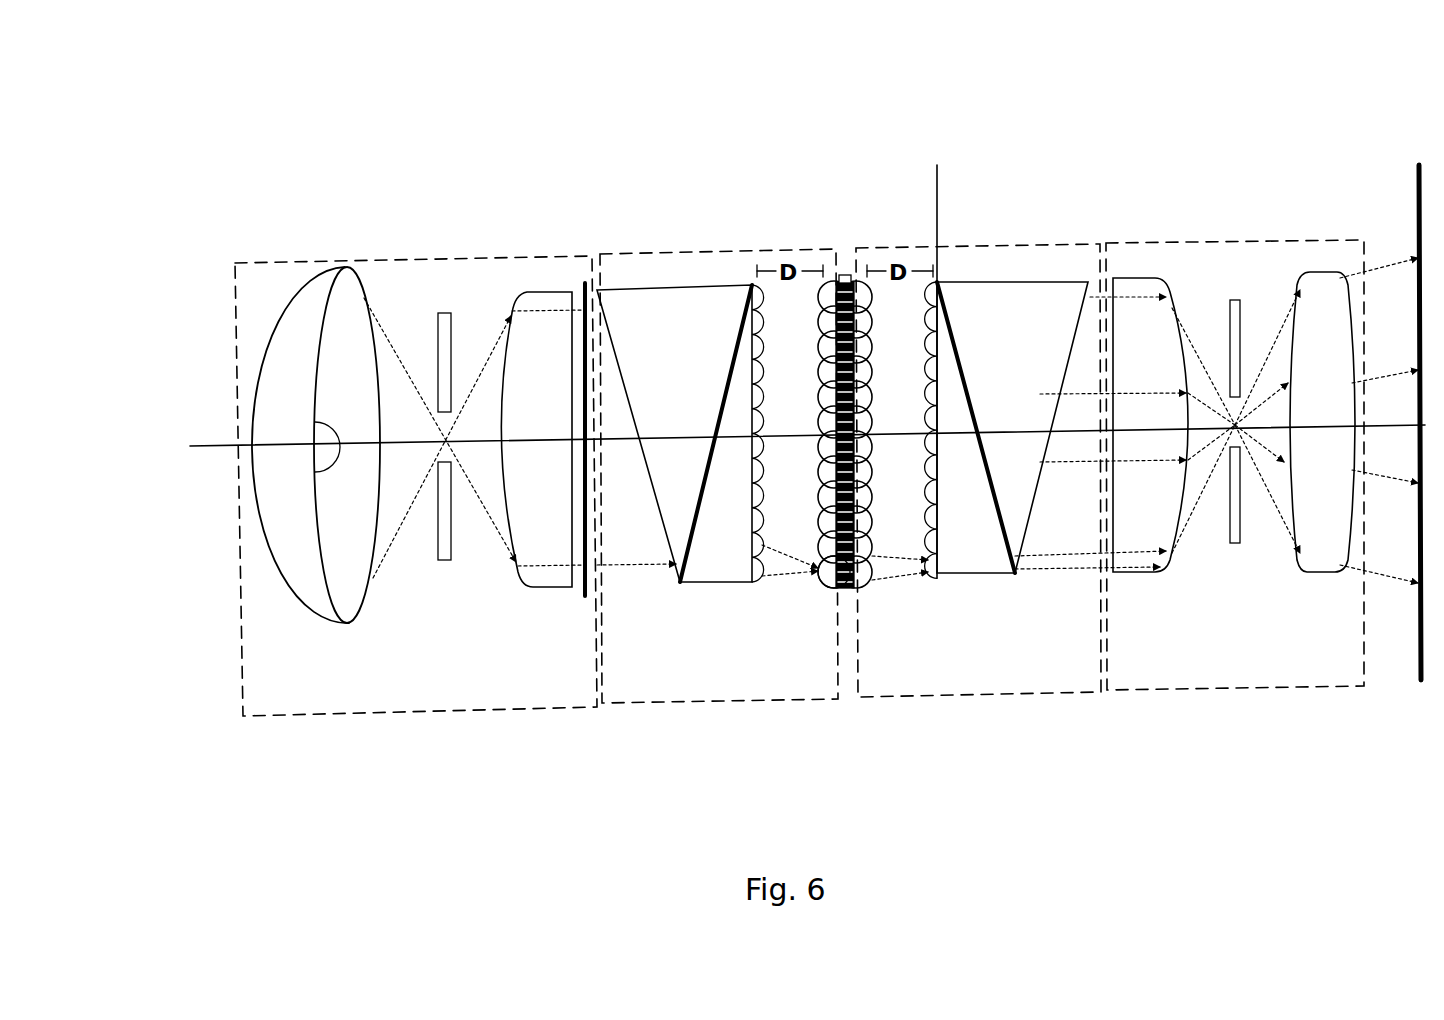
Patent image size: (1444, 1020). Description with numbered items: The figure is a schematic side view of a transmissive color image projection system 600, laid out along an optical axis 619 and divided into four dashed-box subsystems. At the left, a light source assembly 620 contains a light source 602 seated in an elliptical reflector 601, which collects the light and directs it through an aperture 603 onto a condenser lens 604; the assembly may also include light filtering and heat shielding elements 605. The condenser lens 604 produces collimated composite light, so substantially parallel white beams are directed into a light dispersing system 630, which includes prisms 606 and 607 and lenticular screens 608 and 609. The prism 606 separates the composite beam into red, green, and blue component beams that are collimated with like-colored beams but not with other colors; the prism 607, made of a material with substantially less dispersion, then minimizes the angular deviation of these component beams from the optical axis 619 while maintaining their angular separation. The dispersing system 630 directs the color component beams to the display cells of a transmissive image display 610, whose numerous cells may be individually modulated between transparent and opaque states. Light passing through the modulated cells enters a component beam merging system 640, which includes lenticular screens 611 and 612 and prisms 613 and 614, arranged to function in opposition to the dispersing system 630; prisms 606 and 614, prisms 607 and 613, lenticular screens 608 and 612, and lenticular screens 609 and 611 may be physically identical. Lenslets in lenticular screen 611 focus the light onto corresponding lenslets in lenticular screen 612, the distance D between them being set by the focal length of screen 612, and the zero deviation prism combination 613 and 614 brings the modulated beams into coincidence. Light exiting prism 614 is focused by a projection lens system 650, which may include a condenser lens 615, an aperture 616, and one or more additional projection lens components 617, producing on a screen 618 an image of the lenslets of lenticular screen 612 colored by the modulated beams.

The image projection system 600 is at (322, 93).
The elliptical reflector 601 is at (308, 278).
The light source 602 is at (321, 421).
The aperture 603 is at (428, 363).
The condenser lens 604 is at (530, 294).
The light filtering and heat shielding elements 605 is at (583, 292).
The prism 606 is at (655, 288).
The prism 607 is at (725, 585).
The lenticular screen 608 is at (757, 288).
The lenticular screen 609 is at (822, 578).
The transmissive image display 610 is at (840, 282).
The lenticular screen 611 is at (866, 592).
The lenticular screen 612 is at (952, 367).
The prism 613 is at (960, 575).
The prism 614 is at (1045, 283).
The condenser lens 615 is at (1140, 278).
The aperture 616 is at (1234, 298).
The projection lens components 617 is at (1325, 270).
The screen 618 is at (1419, 168).
The optical axis 619 is at (205, 446).
The light source assembly 620 is at (380, 722).
The light dispersing system 630 is at (680, 703).
The component beam merging system 640 is at (925, 705).
The projection lens system 650 is at (1175, 692).